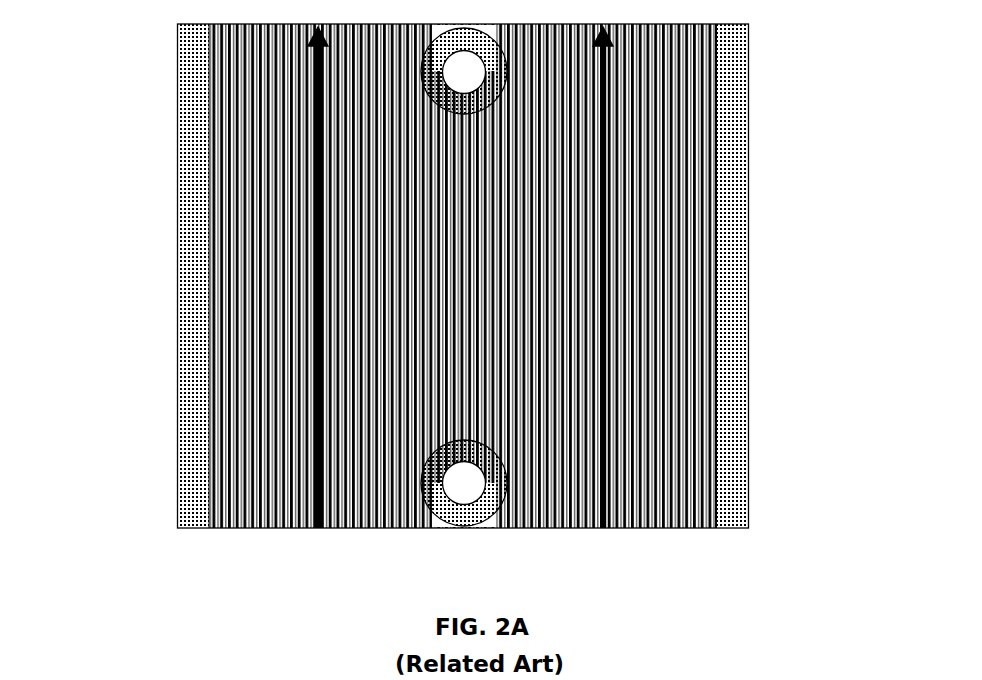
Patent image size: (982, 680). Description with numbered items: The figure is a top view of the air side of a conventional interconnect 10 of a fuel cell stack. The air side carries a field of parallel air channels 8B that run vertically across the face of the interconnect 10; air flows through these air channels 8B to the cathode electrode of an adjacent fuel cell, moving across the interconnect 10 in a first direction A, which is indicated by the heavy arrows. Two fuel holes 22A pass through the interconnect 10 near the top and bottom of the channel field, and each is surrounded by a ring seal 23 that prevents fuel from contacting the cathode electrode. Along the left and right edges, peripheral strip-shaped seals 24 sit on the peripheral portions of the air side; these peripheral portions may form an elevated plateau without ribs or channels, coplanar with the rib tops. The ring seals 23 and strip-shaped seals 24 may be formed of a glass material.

The interconnect 10 is at (150, 184).
The peripheral strip-shaped seals 24 is at (745, 254).
The air channels 8B is at (632, 362).
The first direction A is at (605, 190).
The ring seals 23 is at (425, 525).
The fuel holes 22A is at (490, 527).